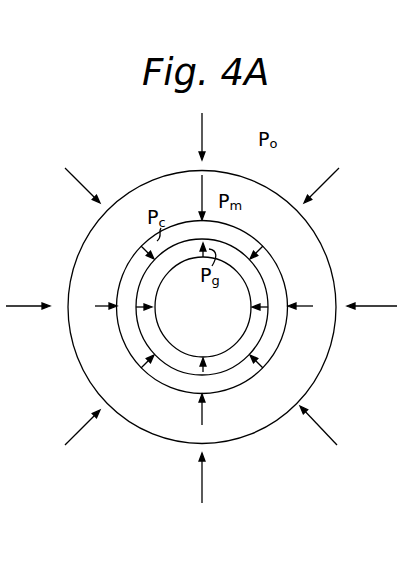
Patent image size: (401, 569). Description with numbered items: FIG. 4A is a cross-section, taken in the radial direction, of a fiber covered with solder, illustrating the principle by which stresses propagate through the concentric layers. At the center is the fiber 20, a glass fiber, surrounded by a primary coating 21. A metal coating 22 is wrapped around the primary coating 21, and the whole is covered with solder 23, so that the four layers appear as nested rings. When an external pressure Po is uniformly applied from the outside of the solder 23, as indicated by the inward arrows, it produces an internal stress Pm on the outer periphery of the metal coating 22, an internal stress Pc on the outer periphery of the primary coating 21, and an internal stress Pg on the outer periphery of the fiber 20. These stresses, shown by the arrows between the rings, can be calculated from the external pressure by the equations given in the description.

The fiber 20 is at (233, 283).
The primary coating 21 is at (255, 288).
The metal coating 22 is at (282, 297).
The solder 23 is at (320, 327).